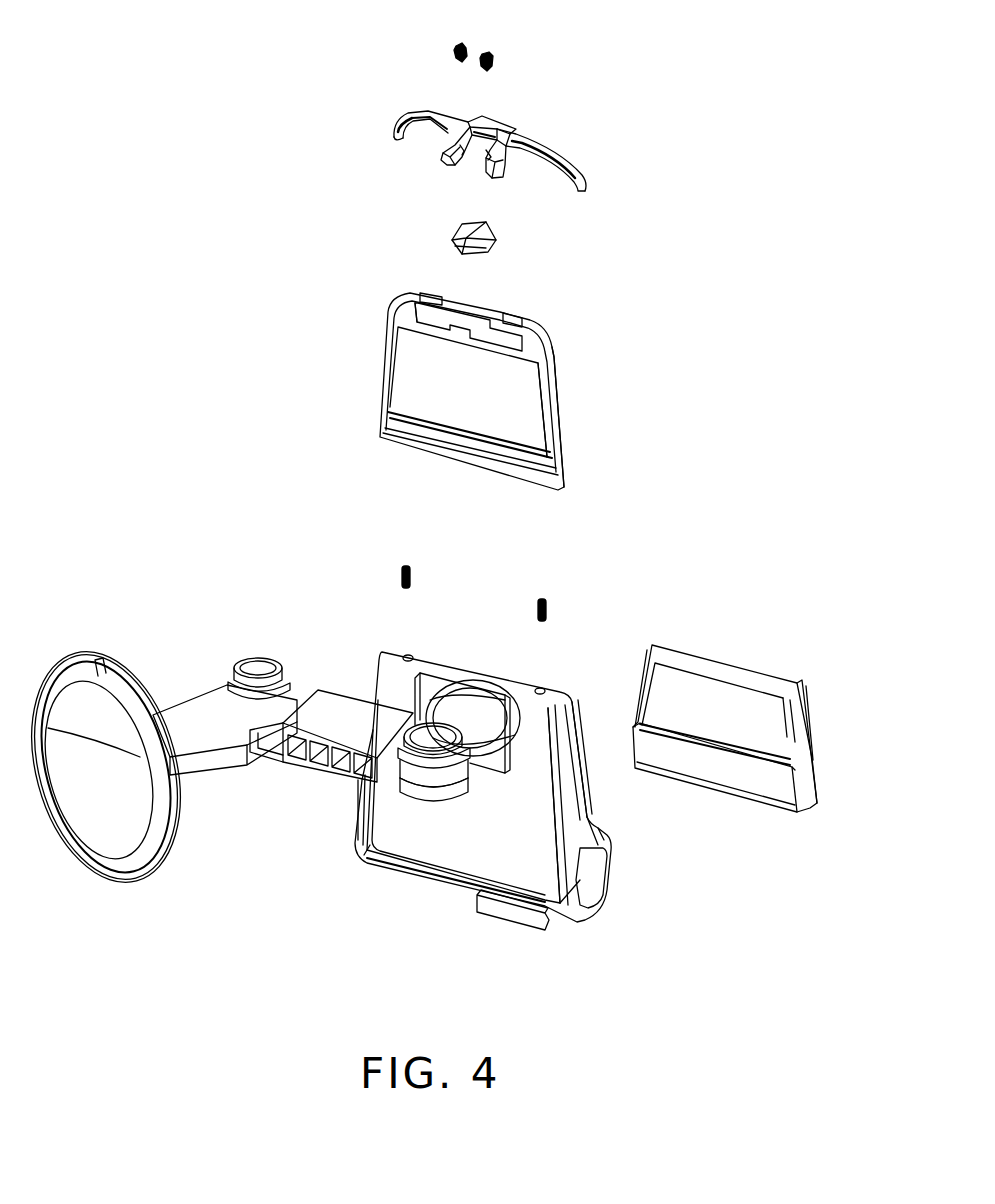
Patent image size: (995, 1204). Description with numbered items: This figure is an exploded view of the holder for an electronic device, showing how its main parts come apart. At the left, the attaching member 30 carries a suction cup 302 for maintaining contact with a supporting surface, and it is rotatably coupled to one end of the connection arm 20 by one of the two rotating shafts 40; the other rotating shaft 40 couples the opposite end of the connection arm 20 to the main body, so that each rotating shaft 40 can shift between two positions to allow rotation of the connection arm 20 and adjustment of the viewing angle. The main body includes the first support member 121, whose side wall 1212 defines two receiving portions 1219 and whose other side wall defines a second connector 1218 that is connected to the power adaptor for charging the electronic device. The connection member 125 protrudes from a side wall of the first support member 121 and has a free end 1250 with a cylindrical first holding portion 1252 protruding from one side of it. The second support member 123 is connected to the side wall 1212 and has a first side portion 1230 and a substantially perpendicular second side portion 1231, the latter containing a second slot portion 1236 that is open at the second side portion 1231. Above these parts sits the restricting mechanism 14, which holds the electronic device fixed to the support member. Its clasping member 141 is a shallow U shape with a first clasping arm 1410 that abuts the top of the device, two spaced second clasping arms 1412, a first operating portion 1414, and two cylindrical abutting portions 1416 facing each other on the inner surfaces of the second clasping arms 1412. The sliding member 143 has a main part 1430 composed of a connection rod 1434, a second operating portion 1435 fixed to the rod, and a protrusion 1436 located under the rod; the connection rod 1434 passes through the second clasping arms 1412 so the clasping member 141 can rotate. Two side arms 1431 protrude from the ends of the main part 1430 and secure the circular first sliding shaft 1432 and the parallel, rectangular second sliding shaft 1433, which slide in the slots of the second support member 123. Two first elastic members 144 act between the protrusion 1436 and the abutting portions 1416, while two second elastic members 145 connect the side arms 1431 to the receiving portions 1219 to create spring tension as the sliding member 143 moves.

The restricting mechanism 14 is at (276, 45).
The first elastic members 144 is at (465, 47).
The clasping member 141 is at (392, 126).
The first clasping arm 1410 is at (588, 178).
The second clasping arms 1412 is at (442, 157).
The first operating portion 1414 is at (498, 130).
The abutting portions 1416 is at (487, 154).
The second operating portion 1435 is at (450, 244).
The sliding member 143 is at (388, 314).
The connection rod 1434 is at (465, 308).
The protrusion 1436 is at (480, 315).
The main part 1430 is at (540, 354).
The side arms 1431 is at (548, 400).
The second sliding shaft 1433 is at (530, 450).
The first sliding shaft 1432 is at (400, 442).
The second elastic members 145 is at (400, 573).
The attaching member 30 is at (210, 715).
The suction cup 302 is at (108, 790).
The rotating shafts 40 is at (260, 668).
The connection arm 20 is at (340, 705).
The first support member 121 is at (425, 846).
The side wall 1212 is at (393, 648).
The receiving portions 1219 is at (410, 654).
The connection member 125 is at (520, 728).
The free end 1250 is at (362, 852).
The first holding portion 1252 is at (445, 805).
The second connector 1218 is at (520, 912).
The second support member 123 is at (708, 662).
The first side portion 1230 is at (655, 778).
The second slot portion 1236 is at (730, 752).
The second side portion 1231 is at (790, 735).